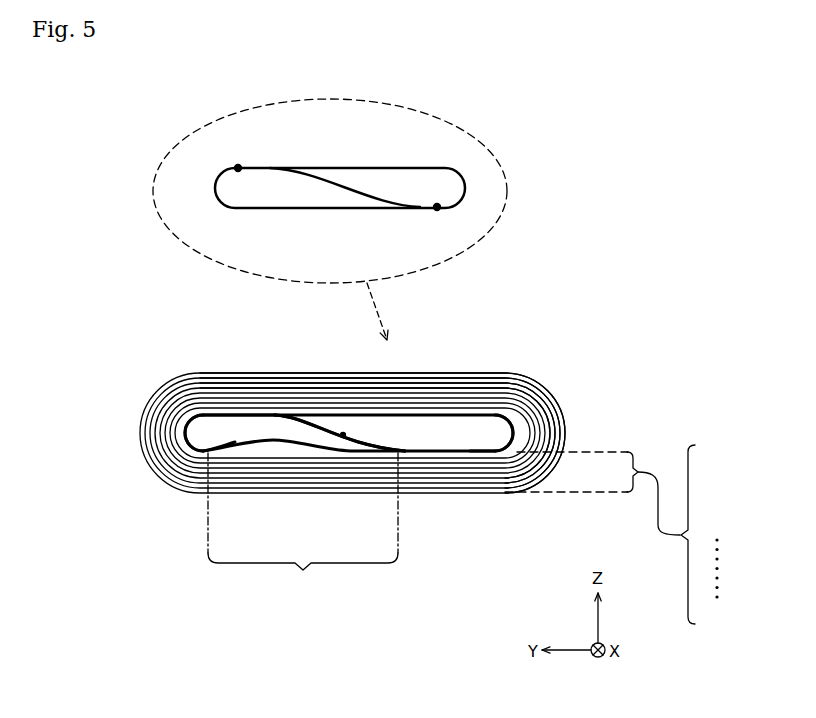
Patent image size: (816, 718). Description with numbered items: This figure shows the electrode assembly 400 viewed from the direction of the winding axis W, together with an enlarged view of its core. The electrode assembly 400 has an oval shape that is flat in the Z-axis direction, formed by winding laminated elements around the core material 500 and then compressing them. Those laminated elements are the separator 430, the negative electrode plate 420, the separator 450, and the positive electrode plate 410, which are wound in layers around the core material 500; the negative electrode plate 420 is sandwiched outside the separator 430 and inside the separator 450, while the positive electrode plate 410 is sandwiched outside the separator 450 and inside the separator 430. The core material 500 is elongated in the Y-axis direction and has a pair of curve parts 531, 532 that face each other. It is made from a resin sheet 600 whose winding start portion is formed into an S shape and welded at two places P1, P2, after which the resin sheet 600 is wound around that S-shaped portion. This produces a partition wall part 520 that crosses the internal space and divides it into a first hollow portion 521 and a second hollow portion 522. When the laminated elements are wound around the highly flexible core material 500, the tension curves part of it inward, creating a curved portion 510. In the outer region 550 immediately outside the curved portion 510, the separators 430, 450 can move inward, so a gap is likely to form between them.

The electrode assembly 400 is at (550, 345).
The core material 500 is at (380, 416).
The resin sheet 600 is at (360, 210).
The welded place P1 is at (238, 165).
The welded place P2 is at (437, 211).
The curved portion 510 is at (255, 435).
The partition wall part 520 is at (323, 431).
The first hollow portion 521 is at (222, 430).
The second hollow portion 522 is at (443, 430).
The curve part 531 is at (204, 437).
The curve part 532 is at (503, 435).
The outer region 550 is at (303, 525).
The winding axis W is at (346, 435).
The separator 430 is at (467, 433).
The negative electrode plate 420 is at (467, 433).
The separator 450 is at (467, 507).
The positive electrode plate 410 is at (467, 459).